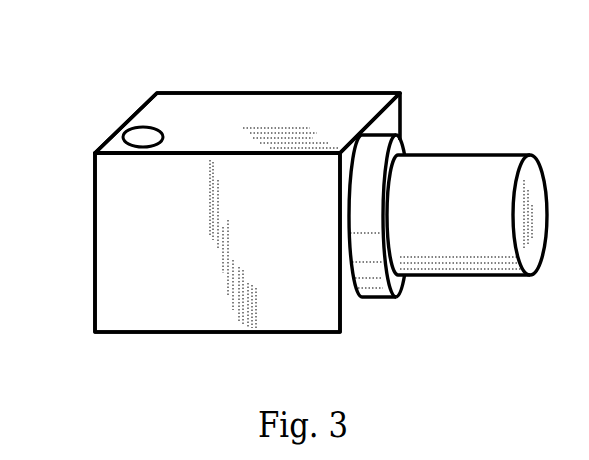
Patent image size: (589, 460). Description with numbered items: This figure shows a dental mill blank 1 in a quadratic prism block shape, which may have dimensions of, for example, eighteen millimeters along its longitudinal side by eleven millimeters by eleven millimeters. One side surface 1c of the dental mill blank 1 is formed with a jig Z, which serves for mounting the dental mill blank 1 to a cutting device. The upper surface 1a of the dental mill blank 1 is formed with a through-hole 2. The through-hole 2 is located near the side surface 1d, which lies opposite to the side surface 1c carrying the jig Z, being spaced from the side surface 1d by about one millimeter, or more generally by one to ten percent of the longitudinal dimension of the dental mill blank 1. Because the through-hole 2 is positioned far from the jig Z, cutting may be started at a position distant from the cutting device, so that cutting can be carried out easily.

The dental mill blank 1 is at (257, 115).
The upper surface 1a is at (327, 110).
The side surface 1c is at (350, 303).
The side surface 1d is at (93, 278).
The through-hole 2 is at (143, 137).
The jig Z is at (465, 193).